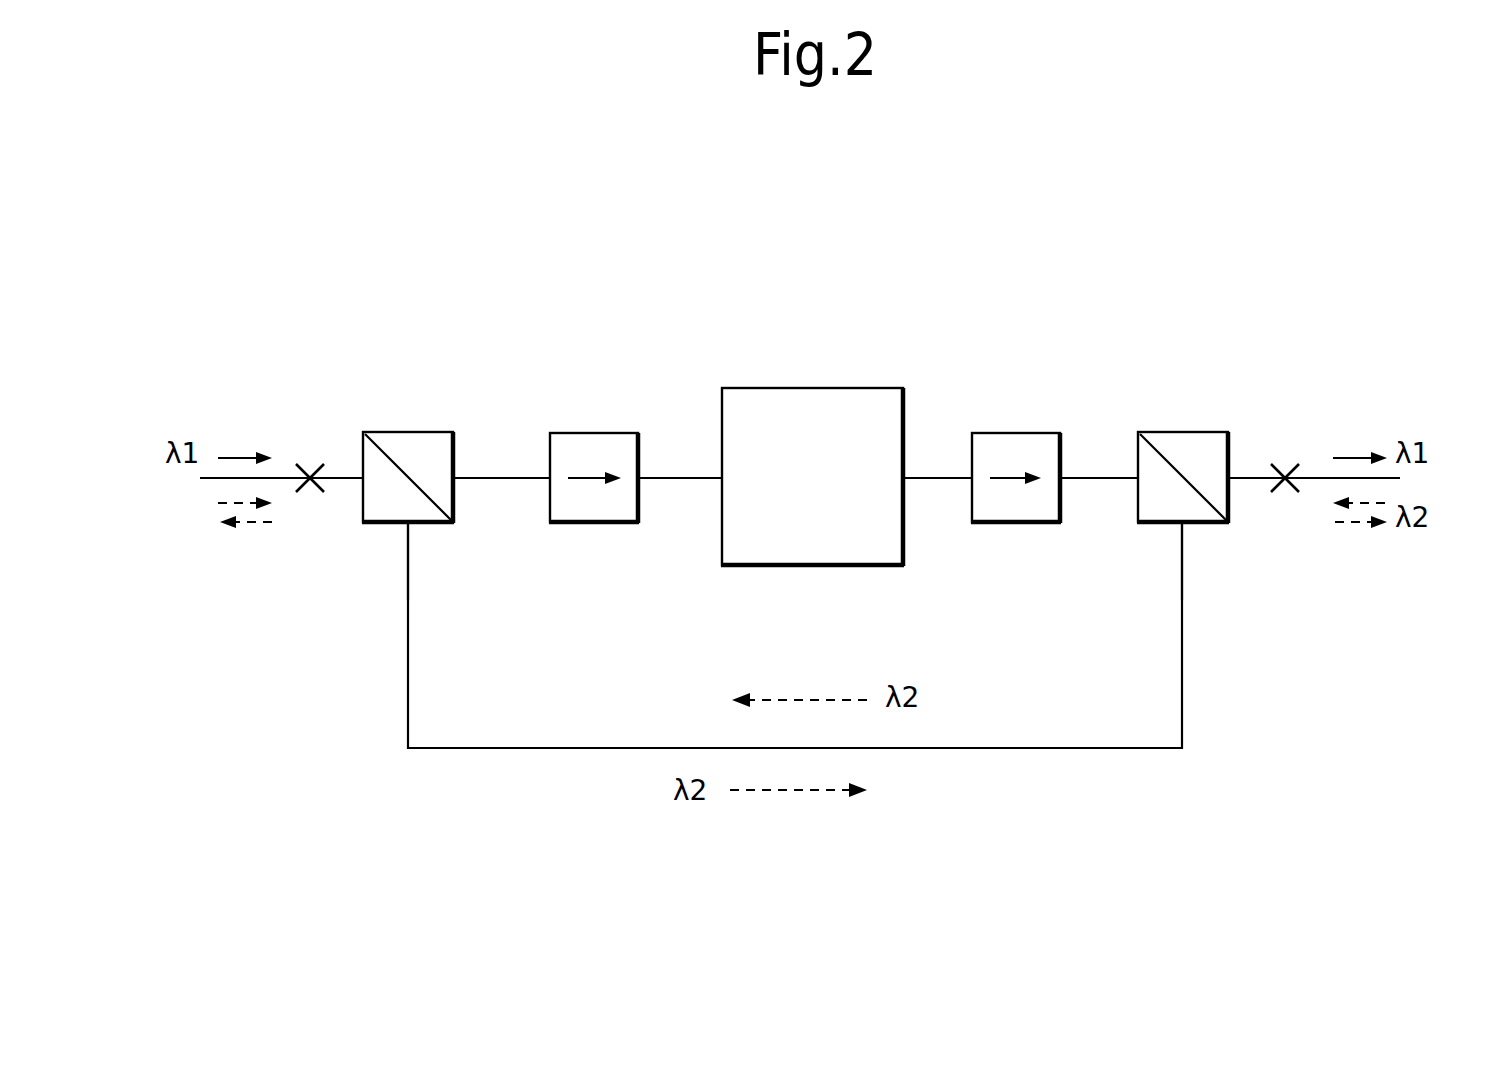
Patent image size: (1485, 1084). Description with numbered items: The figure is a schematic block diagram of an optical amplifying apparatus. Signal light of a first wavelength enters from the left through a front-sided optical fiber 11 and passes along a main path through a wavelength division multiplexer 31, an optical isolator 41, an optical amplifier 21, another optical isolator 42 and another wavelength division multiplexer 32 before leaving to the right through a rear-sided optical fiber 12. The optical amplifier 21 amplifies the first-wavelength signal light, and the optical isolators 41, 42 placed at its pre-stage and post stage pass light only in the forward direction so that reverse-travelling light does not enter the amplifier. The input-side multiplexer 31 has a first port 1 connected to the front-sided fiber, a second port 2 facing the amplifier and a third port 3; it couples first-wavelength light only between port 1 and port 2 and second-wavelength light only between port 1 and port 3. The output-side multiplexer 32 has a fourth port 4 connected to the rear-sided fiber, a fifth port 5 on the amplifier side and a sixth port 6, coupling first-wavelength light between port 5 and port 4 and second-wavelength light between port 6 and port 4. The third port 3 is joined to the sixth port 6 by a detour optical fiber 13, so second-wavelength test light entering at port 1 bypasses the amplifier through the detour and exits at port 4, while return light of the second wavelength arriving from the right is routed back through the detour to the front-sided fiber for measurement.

The first port 1 is at (343, 475).
The second port 2 is at (507, 475).
The third port 3 is at (418, 530).
The fourth port 4 is at (1260, 475).
The fifth port 5 is at (1100, 475).
The sixth port 6 is at (1178, 530).
The optical fiber 11 is at (310, 495).
The optical fiber 12 is at (1283, 497).
The detour optical fiber 13 is at (992, 750).
The optical amplifier 21 is at (808, 388).
The wavelength division multiplexer 31 is at (411, 432).
The wavelength division multiplexer 32 is at (1198, 432).
The optical isolator 41 is at (580, 523).
The optical isolator 42 is at (1003, 523).